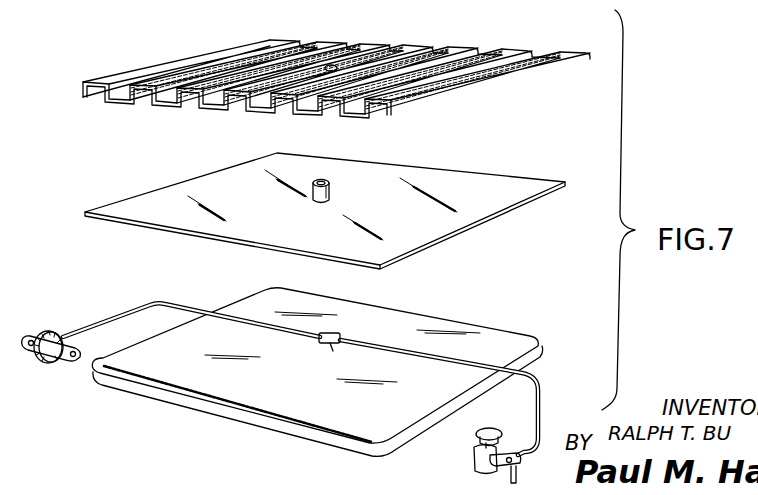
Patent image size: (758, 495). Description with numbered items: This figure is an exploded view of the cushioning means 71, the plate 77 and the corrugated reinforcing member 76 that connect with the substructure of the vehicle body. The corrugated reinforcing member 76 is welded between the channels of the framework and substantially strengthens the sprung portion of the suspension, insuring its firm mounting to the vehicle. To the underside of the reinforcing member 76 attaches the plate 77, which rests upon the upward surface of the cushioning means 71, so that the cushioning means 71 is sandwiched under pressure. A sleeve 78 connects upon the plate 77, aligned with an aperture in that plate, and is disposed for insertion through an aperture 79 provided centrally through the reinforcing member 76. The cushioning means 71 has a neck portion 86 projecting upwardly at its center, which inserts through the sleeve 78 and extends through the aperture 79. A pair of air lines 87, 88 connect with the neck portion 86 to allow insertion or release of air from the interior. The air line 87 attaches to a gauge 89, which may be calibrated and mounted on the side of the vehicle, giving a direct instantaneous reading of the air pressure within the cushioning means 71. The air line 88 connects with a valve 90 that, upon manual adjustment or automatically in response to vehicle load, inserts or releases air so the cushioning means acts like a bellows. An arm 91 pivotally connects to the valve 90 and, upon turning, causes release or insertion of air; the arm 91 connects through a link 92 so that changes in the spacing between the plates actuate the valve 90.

The cushioning means 71 is at (503, 323).
The corrugated reinforcing member 76 is at (174, 62).
The plate 77 is at (483, 172).
The sleeve 78 is at (328, 180).
The aperture 79 is at (336, 65).
The neck portion 86 is at (326, 346).
The air line 87 is at (241, 323).
The air line 88 is at (400, 323).
The gauge 89 is at (52, 330).
The valve 90 is at (489, 428).
The arm 91 is at (484, 472).
The link 92 is at (510, 482).